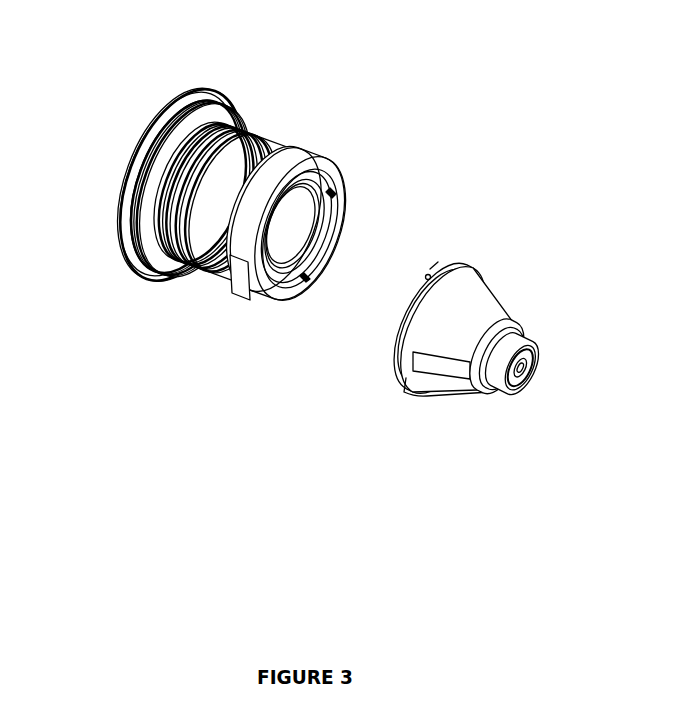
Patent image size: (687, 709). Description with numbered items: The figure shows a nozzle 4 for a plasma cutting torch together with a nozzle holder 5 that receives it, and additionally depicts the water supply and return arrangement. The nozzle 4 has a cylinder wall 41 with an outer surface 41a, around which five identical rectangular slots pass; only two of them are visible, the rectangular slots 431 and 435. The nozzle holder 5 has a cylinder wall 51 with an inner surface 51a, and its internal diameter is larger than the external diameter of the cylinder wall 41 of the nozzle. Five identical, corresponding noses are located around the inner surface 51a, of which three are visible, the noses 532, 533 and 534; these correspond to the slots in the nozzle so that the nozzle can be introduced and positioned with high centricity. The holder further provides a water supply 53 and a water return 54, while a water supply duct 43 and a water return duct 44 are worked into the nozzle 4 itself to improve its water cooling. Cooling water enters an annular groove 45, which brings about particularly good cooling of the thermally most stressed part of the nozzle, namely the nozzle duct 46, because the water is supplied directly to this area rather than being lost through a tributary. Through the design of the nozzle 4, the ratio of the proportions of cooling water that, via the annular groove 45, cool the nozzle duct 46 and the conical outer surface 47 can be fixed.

The nozzle holder 5 is at (259, 259).
The cylinder wall 51 is at (268, 172).
The inner surface 51a is at (333, 227).
The water supply 53 is at (312, 283).
The nose 532 is at (243, 270).
The nose 533 is at (305, 278).
The nose 534 is at (330, 197).
The water return 54 is at (352, 198).
The nozzle 4 is at (492, 355).
The cylinder wall 41 is at (395, 330).
The outer surface 41a is at (437, 263).
The water supply duct 43 is at (438, 368).
The rectangular slot 431 is at (398, 372).
The rectangular slot 435 is at (428, 277).
The water return duct 44 is at (528, 342).
The annular groove 45 is at (497, 347).
The nozzle duct 46 is at (527, 378).
The conical outer surface 47 is at (470, 307).